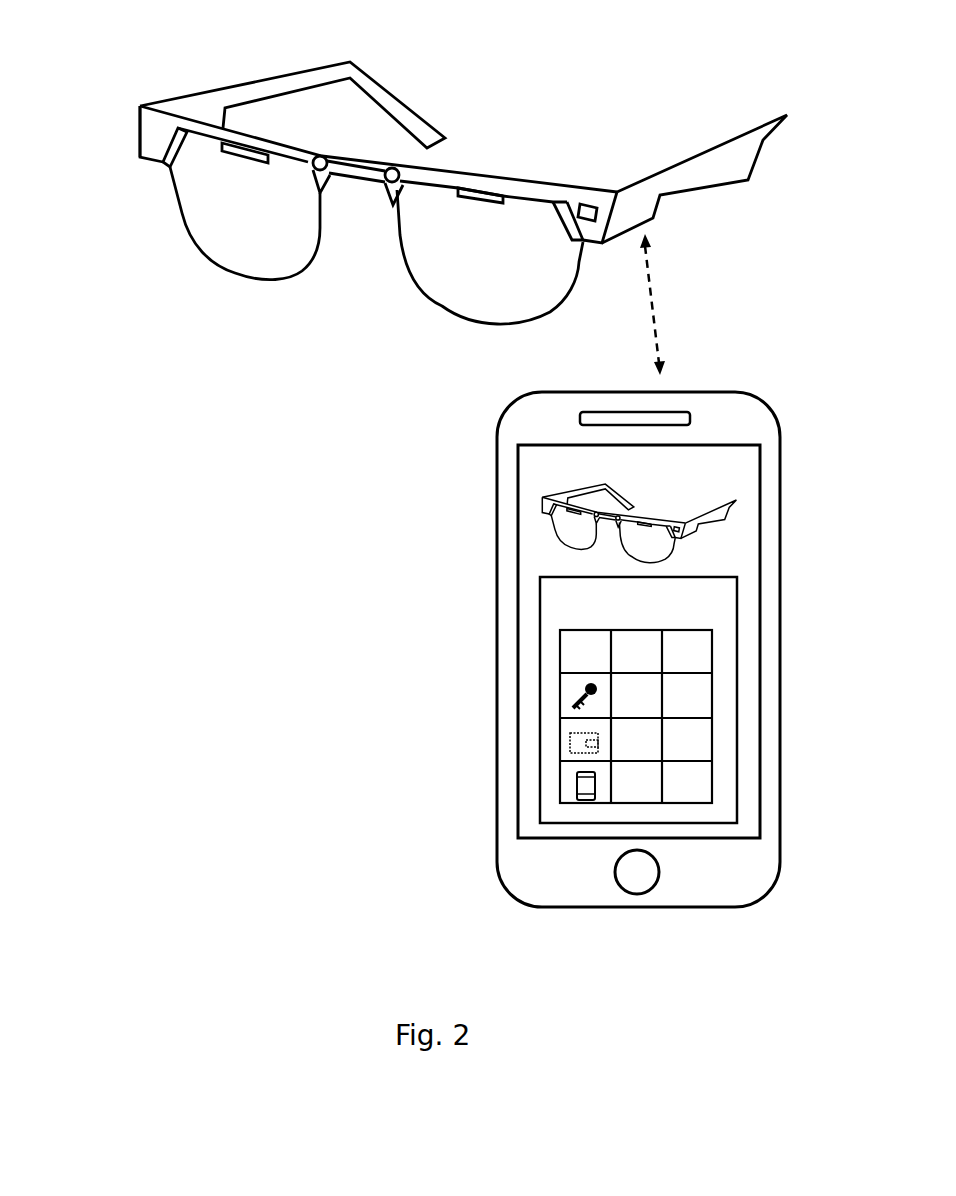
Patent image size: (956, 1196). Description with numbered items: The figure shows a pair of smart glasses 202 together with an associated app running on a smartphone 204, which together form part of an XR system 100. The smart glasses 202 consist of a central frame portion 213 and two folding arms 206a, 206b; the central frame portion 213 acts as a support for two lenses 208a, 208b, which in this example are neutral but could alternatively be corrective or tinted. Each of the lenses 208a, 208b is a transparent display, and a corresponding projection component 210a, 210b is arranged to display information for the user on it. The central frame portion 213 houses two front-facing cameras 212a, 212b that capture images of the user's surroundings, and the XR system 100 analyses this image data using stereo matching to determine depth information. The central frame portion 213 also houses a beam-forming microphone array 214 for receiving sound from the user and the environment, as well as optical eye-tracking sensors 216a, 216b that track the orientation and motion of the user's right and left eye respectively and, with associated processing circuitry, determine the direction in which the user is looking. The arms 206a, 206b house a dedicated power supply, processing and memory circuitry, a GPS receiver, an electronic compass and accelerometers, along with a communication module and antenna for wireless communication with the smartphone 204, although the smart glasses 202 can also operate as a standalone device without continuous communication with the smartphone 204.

The XR system 100 is at (249, 553).
The smart glasses 202 is at (455, 77).
The smartphone 204 is at (497, 511).
The folding arm 206a is at (178, 96).
The folding arm 206b is at (645, 203).
The lens 208a is at (220, 267).
The lens 208b is at (433, 302).
The projection component 210a is at (244, 156).
The projection component 210b is at (488, 201).
The front-facing camera 212a is at (327, 171).
The front-facing camera 212b is at (381, 167).
The central frame portion 213 is at (450, 168).
The beam-forming microphone array 214 is at (584, 205).
The optical eye-tracking sensor 216a is at (166, 165).
The optical eye-tracking sensor 216b is at (565, 240).